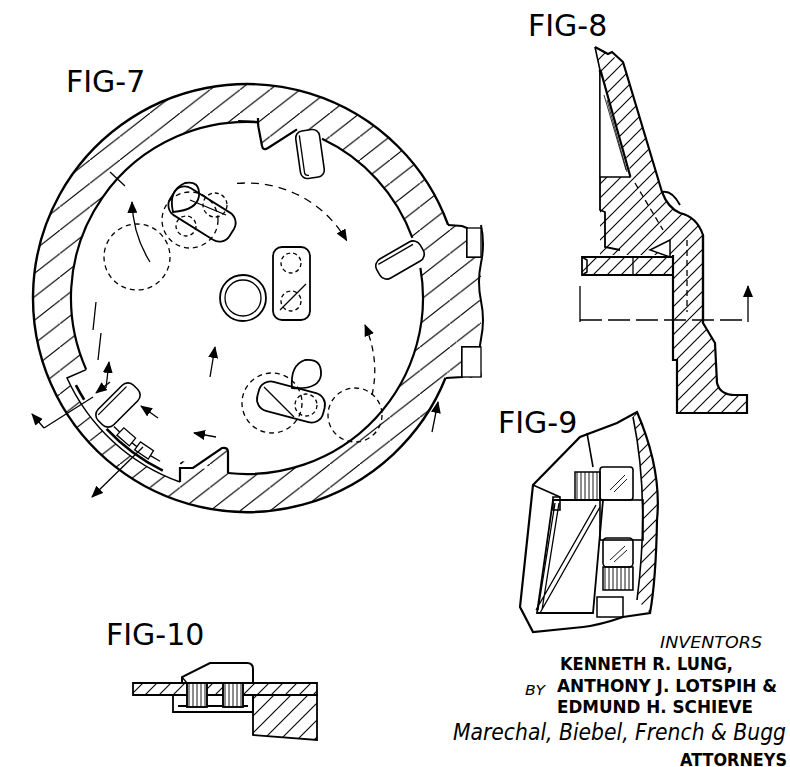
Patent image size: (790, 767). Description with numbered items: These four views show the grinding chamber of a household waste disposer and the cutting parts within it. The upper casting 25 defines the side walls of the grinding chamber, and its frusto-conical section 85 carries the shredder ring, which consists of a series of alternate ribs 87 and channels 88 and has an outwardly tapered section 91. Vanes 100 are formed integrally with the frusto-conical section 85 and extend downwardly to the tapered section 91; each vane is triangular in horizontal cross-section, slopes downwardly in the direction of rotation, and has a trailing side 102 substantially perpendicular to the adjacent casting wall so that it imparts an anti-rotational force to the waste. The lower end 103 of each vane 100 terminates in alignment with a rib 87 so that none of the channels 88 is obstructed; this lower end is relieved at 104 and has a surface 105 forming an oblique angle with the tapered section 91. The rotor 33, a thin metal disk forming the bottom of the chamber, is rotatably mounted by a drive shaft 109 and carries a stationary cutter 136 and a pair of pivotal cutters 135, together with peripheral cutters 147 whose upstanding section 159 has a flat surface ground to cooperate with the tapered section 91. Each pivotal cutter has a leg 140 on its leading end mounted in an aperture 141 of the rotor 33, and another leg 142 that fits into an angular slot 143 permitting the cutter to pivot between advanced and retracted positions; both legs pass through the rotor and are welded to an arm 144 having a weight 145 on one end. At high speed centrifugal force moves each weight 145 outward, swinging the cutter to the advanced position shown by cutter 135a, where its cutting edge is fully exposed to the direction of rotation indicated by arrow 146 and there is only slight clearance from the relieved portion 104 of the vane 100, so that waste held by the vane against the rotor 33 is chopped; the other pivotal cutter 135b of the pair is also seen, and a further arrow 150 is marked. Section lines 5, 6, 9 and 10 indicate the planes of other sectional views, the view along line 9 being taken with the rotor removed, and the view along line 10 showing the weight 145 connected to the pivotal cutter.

In FIG. 7, the upper casting 25 is at (391, 140).
In FIG. 8, the upper casting 25 is at (652, 128).
In FIG. 9, the upper casting 25 is at (659, 602).
In FIG. 7, the rotor 33 is at (118, 180).
In FIG. 8, the rotor 33 is at (582, 265).
In FIG. 10, the rotor 33 is at (133, 688).
In FIG. 7, the vanes 100 is at (278, 125).
In FIG. 8, the vanes 100 is at (603, 145).
In FIG. 9, the vanes 100 is at (558, 548).
In FIG. 7, the trailing side 102 is at (259, 140).
In FIG. 7, the peripheral cutters 147 is at (313, 133).
In FIG. 7, the ribs 87 is at (108, 433).
In FIG. 9, the ribs 87 is at (650, 478).
In FIG. 7, the channels 88 is at (126, 451).
In FIG. 9, the channels 88 is at (635, 523).
In FIG. 7, the drive shaft 109 is at (220, 300).
In FIG. 7, the stationary cutter 136 is at (310, 280).
In FIG. 7, the pivotal cutter in advanced position 135a is at (290, 383).
In FIG. 7, the sensor 135b is at (216, 222).
In FIG. 10, the pivotal cutters 135 is at (239, 662).
In FIG. 7, the angular slot 143 is at (178, 193).
In FIG. 10, the angular slot 143 is at (258, 684).
In FIG. 7, the arm 144 is at (203, 195).
In FIG. 10, the arm 144 is at (178, 703).
In FIG. 7, the path arrow 150 is at (120, 305).
In FIG. 7, the weight 145 is at (147, 290).
In FIG. 10, the weight 145 is at (306, 706).
In FIG. 7, the arrow 146 is at (228, 448).
In FIG. 7, the section line 10— 10 is at (244, 386).
In FIG. 7, the section line 5 is at (77, 409).
In FIG. 7, the section line 6 is at (131, 466).
In FIG. 8, the section line 9— 9 is at (664, 316).
In FIG. 8, the frusto-conical section 85 is at (600, 92).
In FIG. 8, the relieved portion 104 is at (600, 238).
In FIG. 9, the relieved portion 104 is at (553, 500).
In FIG. 8, the tapered section 91 is at (676, 210).
In FIG. 9, the tapered section 91 is at (627, 550).
In FIG. 8, the upstanding section 159 is at (700, 252).
In FIG. 8, the lower end 103 is at (612, 258).
In FIG. 8, the surface 105 is at (642, 273).
In FIG. 9, the surface 105 is at (570, 490).
In FIG. 10, the aperture 141 is at (180, 683).
In FIG. 10, the leg 140 is at (197, 711).
In FIG. 10, the leg 142 is at (235, 711).